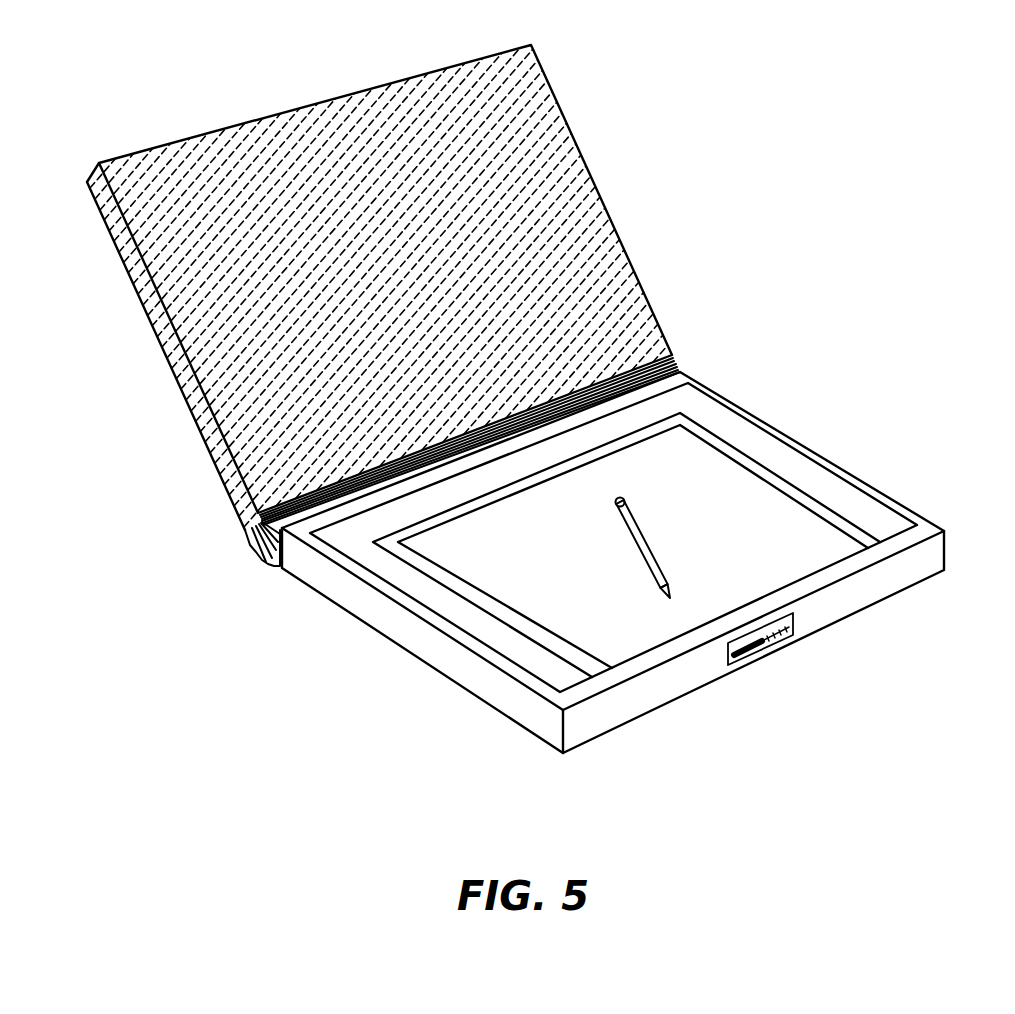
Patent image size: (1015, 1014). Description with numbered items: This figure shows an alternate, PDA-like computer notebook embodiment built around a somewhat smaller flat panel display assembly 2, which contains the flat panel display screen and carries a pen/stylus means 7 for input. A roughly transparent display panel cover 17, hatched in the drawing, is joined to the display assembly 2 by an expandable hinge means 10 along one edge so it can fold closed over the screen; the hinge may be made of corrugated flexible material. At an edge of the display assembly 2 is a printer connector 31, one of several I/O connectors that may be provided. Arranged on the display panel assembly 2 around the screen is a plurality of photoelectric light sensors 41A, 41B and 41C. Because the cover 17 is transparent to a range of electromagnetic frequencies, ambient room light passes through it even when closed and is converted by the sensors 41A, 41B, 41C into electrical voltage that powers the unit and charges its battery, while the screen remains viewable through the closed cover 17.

The flat panel display assembly 2 is at (897, 590).
The pen/stylus means 7 is at (642, 538).
The expandable hinge means 10 is at (252, 556).
The display panel cover 17 is at (268, 146).
The printer connector 31 is at (773, 635).
The photoelectric light sensor 41A is at (773, 458).
The photoelectric light sensor 41B is at (512, 465).
The photoelectric light sensor 41C is at (462, 605).